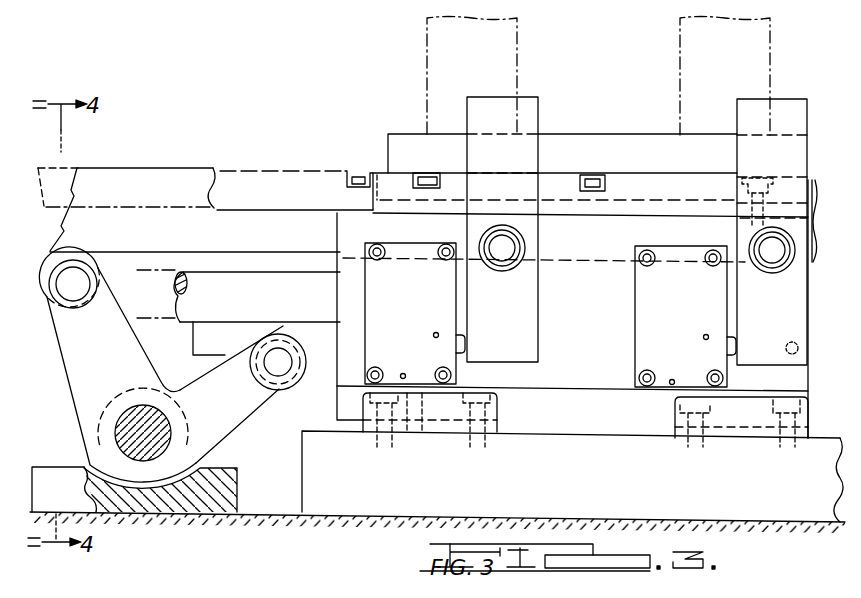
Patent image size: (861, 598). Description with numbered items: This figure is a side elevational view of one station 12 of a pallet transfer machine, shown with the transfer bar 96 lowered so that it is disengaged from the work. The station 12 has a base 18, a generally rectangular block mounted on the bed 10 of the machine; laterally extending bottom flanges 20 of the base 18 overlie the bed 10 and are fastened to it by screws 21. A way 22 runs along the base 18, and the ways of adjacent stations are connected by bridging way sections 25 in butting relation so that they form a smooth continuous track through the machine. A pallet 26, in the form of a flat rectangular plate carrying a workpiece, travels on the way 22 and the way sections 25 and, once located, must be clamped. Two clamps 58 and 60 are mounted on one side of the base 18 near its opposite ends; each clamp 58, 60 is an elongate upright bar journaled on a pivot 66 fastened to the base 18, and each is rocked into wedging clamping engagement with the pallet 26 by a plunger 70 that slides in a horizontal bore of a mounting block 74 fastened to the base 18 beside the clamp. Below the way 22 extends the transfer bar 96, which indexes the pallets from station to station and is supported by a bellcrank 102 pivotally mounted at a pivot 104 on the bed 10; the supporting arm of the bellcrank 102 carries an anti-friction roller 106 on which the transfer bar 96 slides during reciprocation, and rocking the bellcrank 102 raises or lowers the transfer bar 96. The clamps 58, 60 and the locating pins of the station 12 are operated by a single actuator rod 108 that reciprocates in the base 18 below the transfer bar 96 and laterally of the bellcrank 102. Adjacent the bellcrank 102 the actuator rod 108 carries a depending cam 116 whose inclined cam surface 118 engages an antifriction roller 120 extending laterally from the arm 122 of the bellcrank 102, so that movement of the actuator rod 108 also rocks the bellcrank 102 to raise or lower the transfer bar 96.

The bed 10 is at (247, 516).
The station 12 is at (556, 64).
The base 18 is at (592, 334).
The bottom flanges 20 is at (493, 413).
The screws 21 is at (778, 445).
The way 22 is at (668, 202).
The bridging way sections 25 is at (257, 177).
The pallet 26 is at (573, 140).
The clamp 58 is at (520, 284).
The clamp 60 is at (752, 154).
The pivot 66 is at (515, 245).
The plunger 70 is at (465, 340).
The mounting block 74 is at (424, 313).
The transfer bar 96 is at (143, 184).
The bellcrank 102 is at (133, 363).
The pivot 104 is at (163, 443).
The anti-friction roller 106 is at (100, 262).
The actuator rod 108 is at (308, 304).
The depending cam 116 is at (206, 332).
The inclined cam surface 118 is at (238, 340).
The antifriction roller 120 is at (280, 388).
The arm 122 is at (215, 421).